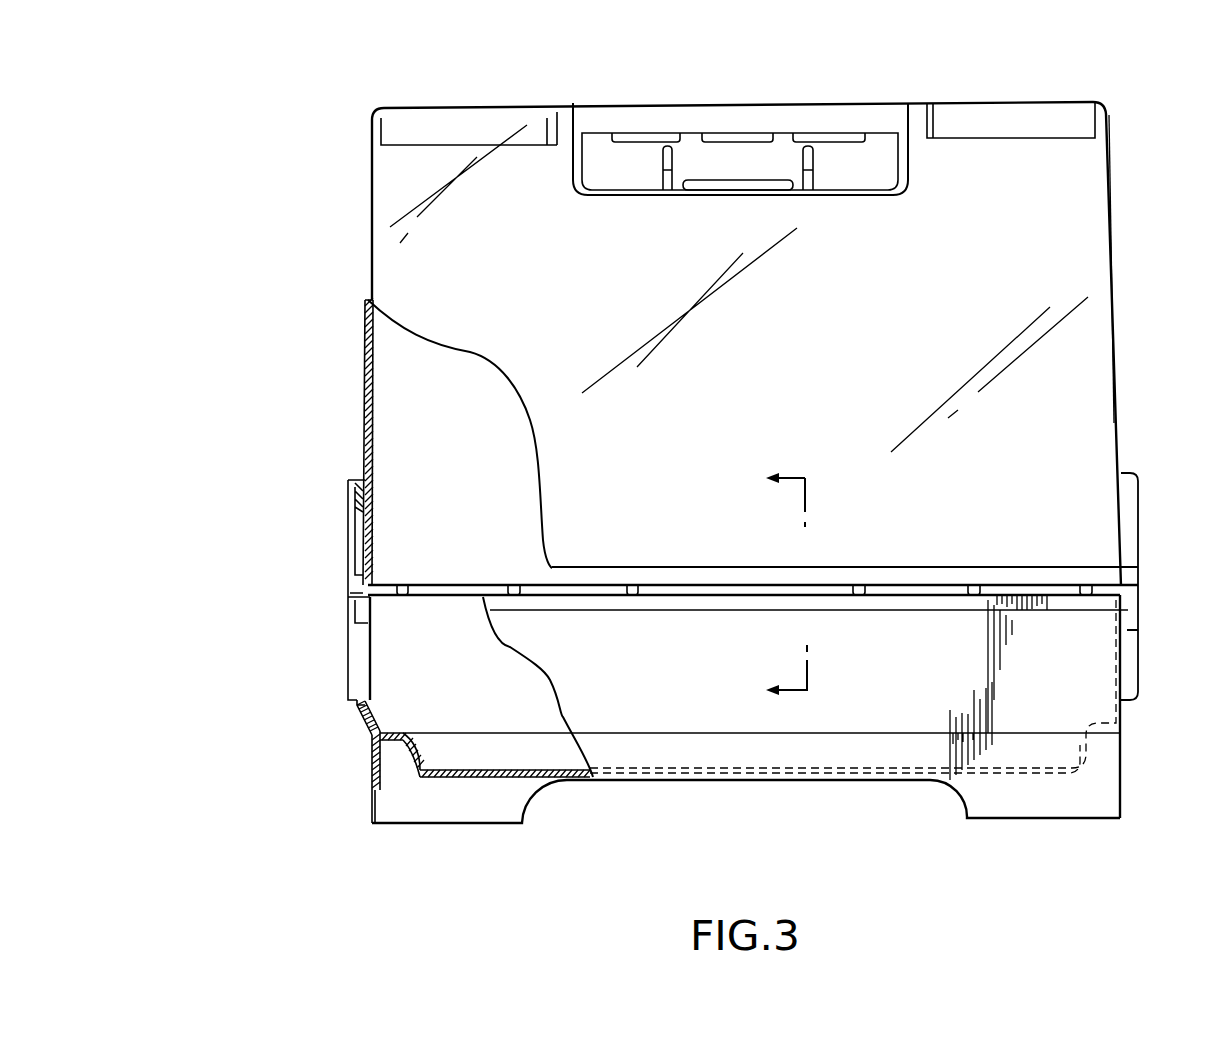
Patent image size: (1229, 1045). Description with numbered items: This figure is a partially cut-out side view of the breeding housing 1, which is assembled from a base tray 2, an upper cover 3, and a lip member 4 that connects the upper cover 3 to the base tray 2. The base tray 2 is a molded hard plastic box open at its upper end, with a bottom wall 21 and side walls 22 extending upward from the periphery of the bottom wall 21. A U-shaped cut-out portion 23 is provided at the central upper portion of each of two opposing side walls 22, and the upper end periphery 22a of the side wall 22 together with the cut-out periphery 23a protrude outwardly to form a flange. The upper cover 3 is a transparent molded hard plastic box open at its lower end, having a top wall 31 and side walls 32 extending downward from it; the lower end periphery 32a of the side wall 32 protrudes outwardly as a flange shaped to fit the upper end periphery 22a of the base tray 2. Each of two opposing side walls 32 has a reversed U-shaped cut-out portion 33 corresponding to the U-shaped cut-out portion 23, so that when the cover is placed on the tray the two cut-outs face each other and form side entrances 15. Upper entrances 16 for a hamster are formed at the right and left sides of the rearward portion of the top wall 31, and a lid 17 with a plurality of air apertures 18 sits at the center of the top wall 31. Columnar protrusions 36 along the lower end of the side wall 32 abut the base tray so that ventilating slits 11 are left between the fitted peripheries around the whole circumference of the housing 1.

The breeding housing 1 is at (1147, 201).
The base tray 2 is at (767, 750).
The upper cover 3 is at (1087, 322).
The lip member 4 is at (807, 580).
The ventilating slits 11 is at (912, 590).
The side entrances 15 is at (250, 572).
The upper entrances 16 is at (468, 128).
The lid 17 is at (780, 153).
The air apertures 18 is at (732, 130).
The bottom wall 21 is at (572, 775).
The side walls 22 is at (683, 715).
The upper end periphery 22a is at (715, 608).
The U-shaped cut-out portion 23 is at (357, 652).
The cut-out periphery 23a is at (357, 710).
The top wall 31 is at (970, 100).
The side walls 32 is at (1080, 403).
The lower end periphery 32a is at (697, 578).
The reversed U-shaped cut-out portion 33 is at (345, 566).
The protrusions 36 is at (510, 590).